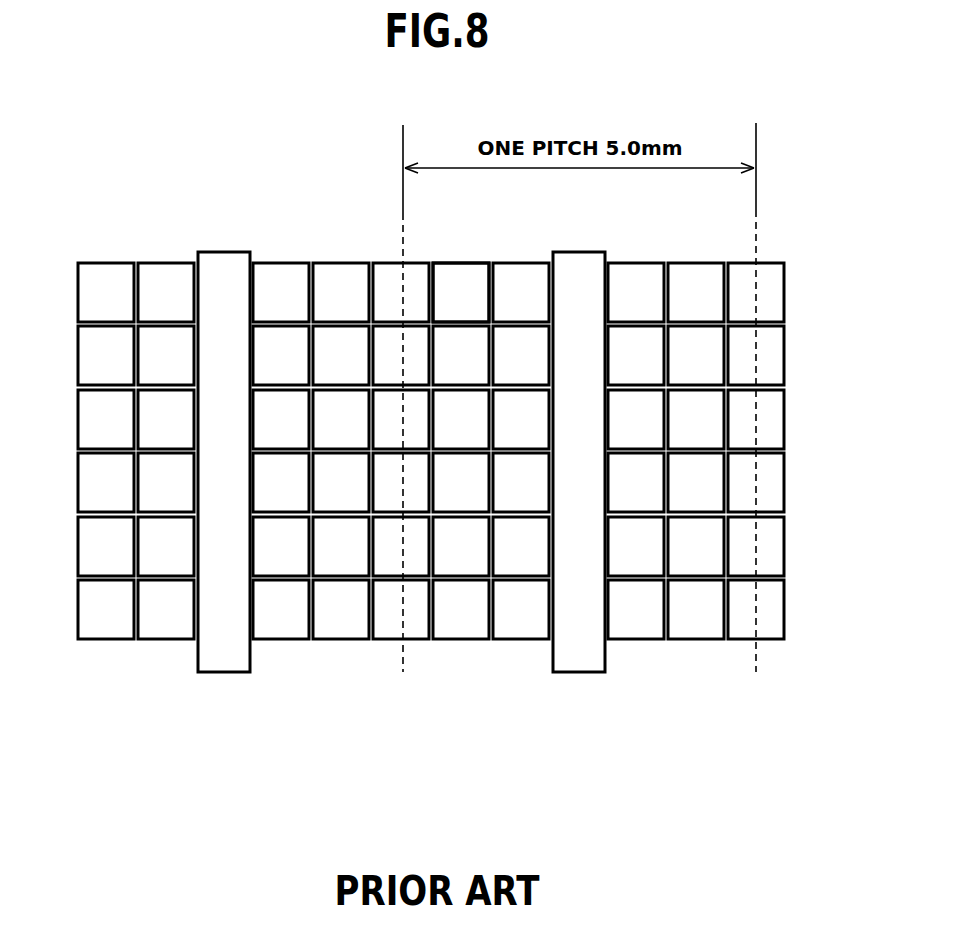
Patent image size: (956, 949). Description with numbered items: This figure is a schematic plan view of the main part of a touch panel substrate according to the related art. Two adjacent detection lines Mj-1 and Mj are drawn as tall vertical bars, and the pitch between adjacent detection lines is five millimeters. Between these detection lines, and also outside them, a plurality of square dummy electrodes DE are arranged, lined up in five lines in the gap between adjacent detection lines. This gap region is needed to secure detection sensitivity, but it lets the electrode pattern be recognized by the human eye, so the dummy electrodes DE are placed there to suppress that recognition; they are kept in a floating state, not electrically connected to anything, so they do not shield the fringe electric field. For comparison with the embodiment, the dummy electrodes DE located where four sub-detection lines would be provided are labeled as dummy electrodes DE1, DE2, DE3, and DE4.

The dummy electrode DE is at (388, 263).
The dummy electrode DE1 is at (105, 639).
The dummy electrode DE2 is at (340, 639).
The dummy electrode DE3 is at (460, 639).
The dummy electrode DE4 is at (697, 639).
The detection line Mj-1 is at (228, 672).
The detection line Mj is at (580, 672).